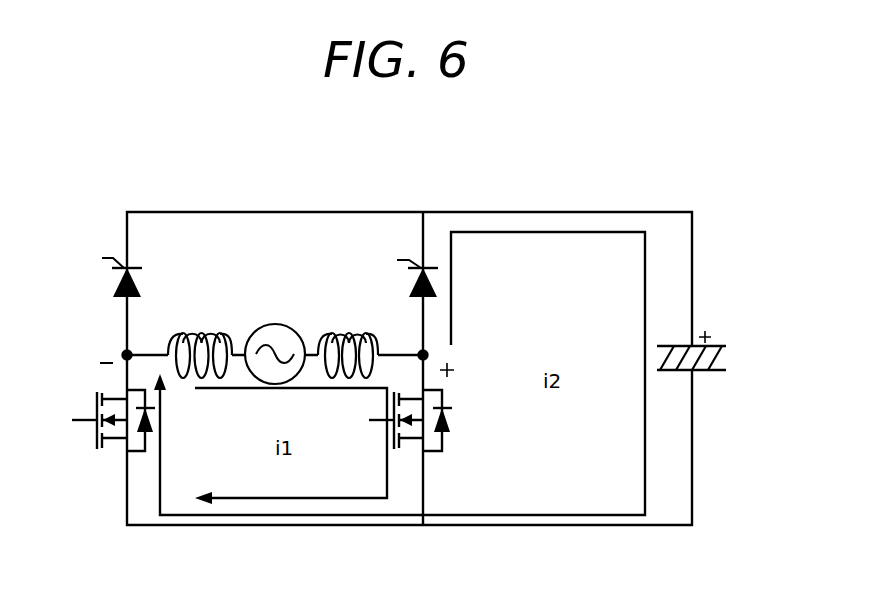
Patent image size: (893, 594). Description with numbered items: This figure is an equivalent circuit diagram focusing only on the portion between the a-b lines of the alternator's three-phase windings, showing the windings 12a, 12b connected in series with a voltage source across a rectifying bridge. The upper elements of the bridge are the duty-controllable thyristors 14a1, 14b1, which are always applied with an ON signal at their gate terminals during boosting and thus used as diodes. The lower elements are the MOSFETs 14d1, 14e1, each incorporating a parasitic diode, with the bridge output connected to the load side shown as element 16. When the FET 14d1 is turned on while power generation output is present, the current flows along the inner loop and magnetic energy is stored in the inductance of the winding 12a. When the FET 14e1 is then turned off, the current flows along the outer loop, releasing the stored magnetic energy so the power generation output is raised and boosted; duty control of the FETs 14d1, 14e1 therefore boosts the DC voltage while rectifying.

The three-phase winding 12a is at (195, 333).
The three-phase winding 12b is at (345, 333).
The thyristor 14a1 is at (138, 265).
The thyristor 14b1 is at (413, 283).
The MOSFET 14d1 is at (98, 450).
The MOSFET 14e1 is at (408, 440).
The battery 16 is at (702, 373).